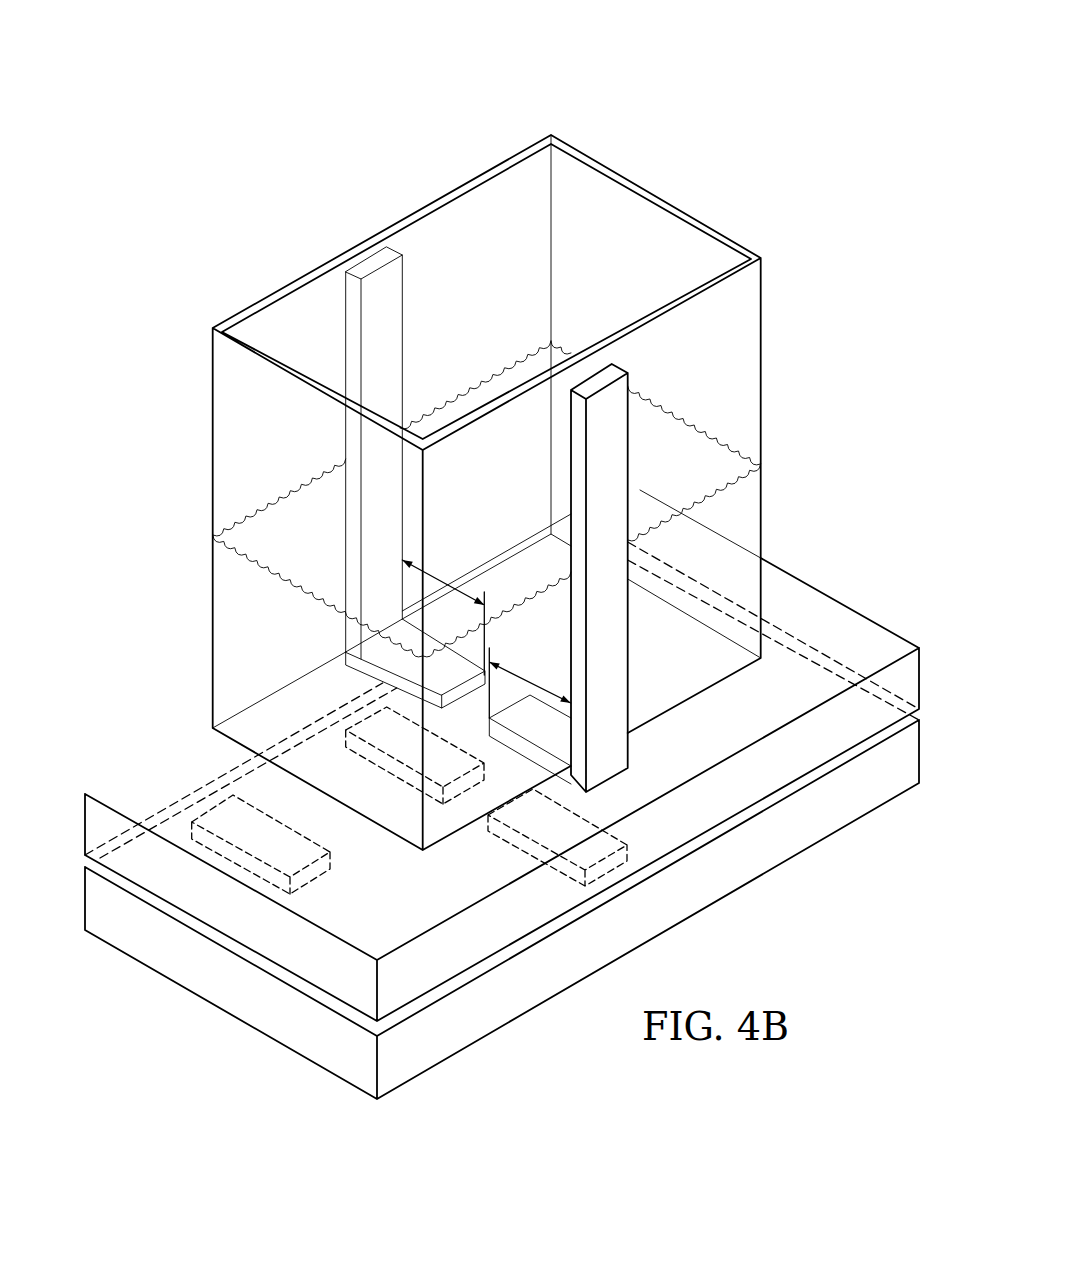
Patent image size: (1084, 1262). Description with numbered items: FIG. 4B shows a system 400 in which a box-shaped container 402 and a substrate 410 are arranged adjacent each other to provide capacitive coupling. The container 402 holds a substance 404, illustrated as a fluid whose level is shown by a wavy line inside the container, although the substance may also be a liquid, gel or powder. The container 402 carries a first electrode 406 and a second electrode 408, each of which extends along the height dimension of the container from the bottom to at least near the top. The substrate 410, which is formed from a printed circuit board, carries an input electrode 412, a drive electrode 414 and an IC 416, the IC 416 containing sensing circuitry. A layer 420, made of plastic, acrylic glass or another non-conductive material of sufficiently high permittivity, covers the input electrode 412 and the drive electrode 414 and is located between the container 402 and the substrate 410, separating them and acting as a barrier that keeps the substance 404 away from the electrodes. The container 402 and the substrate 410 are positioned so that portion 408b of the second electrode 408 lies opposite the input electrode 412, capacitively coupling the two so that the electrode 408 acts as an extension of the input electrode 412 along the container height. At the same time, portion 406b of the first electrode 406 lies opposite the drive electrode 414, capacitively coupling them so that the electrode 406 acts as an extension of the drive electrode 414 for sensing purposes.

The system 400 is at (318, 80).
The container 402 is at (683, 185).
The substance 404 is at (677, 421).
The first electrode 406 is at (402, 306).
The portion of electrode 406 406b is at (426, 573).
The second electrode 408 is at (627, 502).
The portion of electrode 408 408b is at (520, 678).
The substrate 410 is at (220, 997).
The input electrode 412 is at (627, 858).
The drive electrode 414 is at (360, 735).
The IC 416 is at (330, 857).
The layer 420 is at (822, 600).